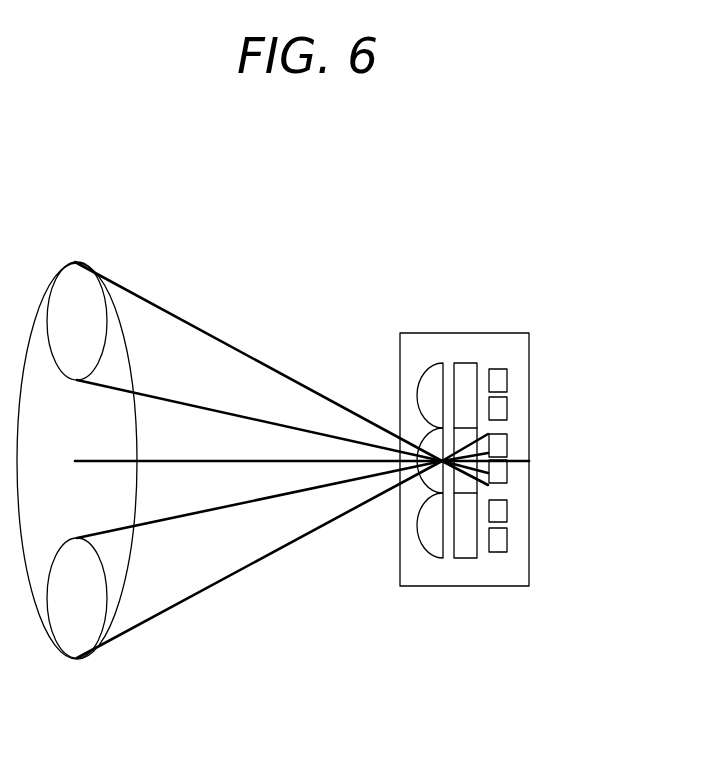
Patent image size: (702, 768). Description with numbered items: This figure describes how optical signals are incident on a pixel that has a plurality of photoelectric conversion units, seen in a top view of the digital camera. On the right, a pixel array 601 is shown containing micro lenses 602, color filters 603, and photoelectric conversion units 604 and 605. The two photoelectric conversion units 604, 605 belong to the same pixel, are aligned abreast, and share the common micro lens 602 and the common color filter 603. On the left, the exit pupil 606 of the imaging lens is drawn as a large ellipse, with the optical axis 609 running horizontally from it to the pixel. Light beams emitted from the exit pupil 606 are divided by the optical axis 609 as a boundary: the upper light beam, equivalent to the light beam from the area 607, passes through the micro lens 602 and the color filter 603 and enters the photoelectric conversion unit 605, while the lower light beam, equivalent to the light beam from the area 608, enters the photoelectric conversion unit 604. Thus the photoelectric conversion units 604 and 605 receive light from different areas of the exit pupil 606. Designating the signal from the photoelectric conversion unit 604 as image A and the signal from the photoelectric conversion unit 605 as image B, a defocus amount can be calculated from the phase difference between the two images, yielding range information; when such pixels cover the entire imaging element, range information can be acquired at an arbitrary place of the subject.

The pixel array 601 is at (529, 362).
The micro lens 602 is at (423, 372).
The color filter 603 is at (465, 362).
The photoelectric conversion unit 604 is at (507, 438).
The photoelectric conversion unit 605 is at (507, 457).
The exit pupil 606 is at (122, 325).
The area 607 is at (75, 262).
The area 608 is at (105, 583).
The optical axis 609 is at (221, 460).